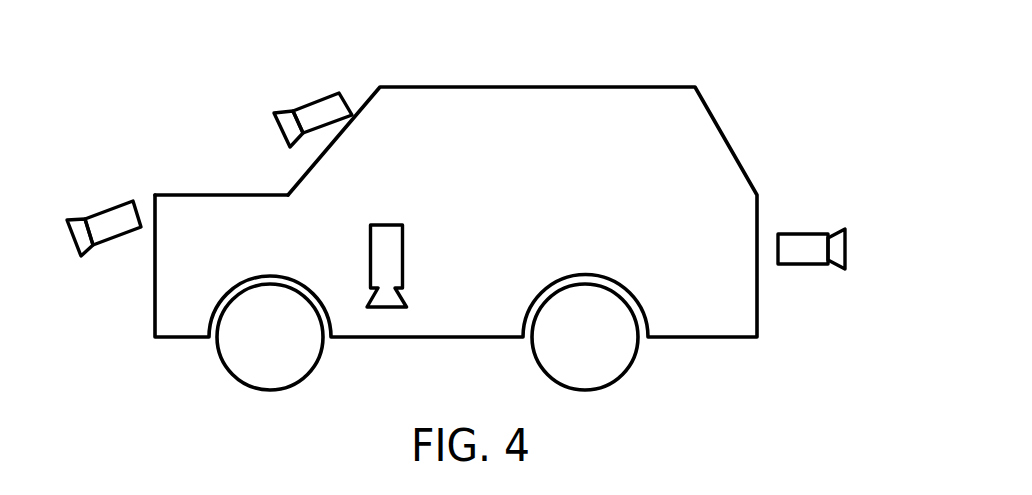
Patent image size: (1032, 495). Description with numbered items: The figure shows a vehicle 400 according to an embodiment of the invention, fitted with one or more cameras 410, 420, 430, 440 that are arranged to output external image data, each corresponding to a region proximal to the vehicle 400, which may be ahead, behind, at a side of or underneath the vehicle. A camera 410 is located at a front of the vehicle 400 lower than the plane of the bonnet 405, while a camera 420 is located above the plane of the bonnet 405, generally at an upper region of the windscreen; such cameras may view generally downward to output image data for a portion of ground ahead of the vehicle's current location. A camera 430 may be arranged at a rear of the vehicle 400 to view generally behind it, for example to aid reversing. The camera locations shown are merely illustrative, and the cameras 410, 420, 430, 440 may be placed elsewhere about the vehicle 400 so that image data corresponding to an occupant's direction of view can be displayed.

The vehicle 400 is at (456, 238).
The bonnet 405 is at (221, 182).
The camera 410 is at (104, 197).
The camera 420 is at (313, 85).
The camera 430 is at (422, 256).
The camera 440 is at (841, 236).